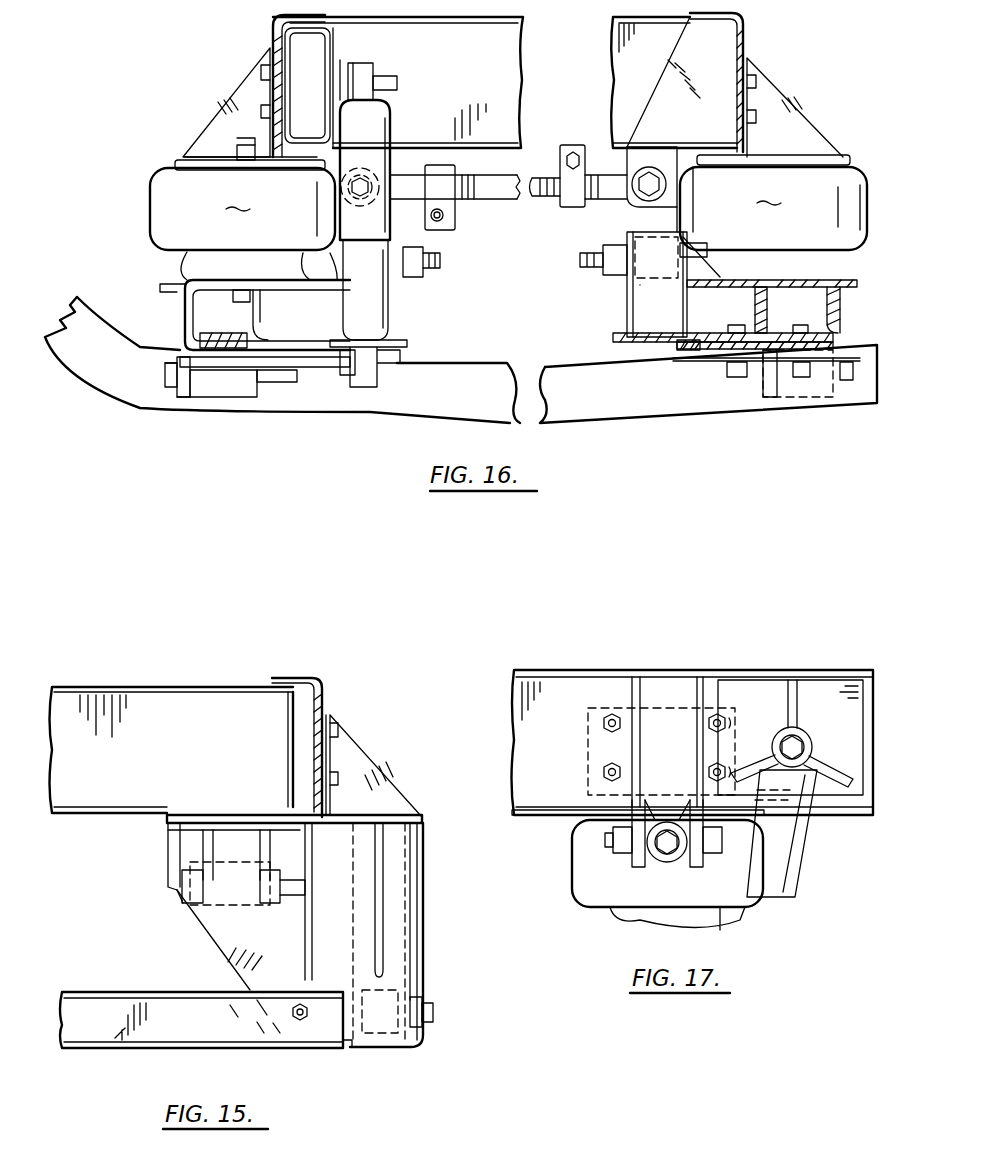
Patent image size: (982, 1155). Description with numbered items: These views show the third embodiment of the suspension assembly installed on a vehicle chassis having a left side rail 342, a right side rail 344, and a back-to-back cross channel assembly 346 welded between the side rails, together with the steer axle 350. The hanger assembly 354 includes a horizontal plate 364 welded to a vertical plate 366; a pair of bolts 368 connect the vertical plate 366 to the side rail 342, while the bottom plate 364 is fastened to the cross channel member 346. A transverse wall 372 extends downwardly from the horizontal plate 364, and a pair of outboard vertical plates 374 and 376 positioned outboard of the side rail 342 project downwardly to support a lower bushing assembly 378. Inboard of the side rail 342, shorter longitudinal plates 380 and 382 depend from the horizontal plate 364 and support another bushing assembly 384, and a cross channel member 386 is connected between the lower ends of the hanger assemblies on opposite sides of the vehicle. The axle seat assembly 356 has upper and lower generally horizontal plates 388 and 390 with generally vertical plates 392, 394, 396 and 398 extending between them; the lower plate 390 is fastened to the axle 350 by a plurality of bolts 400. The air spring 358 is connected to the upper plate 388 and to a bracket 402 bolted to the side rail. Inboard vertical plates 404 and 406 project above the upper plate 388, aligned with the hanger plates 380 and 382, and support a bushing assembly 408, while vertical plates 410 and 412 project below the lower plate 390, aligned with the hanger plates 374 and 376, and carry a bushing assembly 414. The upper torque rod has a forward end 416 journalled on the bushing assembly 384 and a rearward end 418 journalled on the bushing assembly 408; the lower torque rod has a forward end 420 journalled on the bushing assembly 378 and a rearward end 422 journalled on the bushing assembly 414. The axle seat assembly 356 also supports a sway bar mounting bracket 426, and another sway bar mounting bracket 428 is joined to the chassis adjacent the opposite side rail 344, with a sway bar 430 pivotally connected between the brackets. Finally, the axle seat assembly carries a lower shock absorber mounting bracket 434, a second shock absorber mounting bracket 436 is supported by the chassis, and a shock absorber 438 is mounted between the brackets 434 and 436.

In FIG. 16, the left side rail 342 is at (273, 22).
In FIG. 15, the left side rail 342 is at (318, 678).
In FIG. 16, the right side rail 344 is at (743, 38).
In FIG. 17, the right side rail 344 is at (587, 670).
In FIG. 16, the back-to-back cross channel assembly 346 is at (518, 74).
In FIG. 15, the back-to-back cross channel assembly 346 is at (190, 680).
In FIG. 17, the back-to-back cross channel assembly 346 is at (790, 705).
In FIG. 16, the steer axle 350 is at (547, 363).
In FIG. 15, the hanger assembly 354 is at (436, 868).
In FIG. 16, the axle seat assembly 356 is at (183, 310).
In FIG. 16, the air spring 358 is at (870, 162).
In FIG. 17, the air spring 358 is at (570, 903).
In FIG. 15, the horizontal plate 364 is at (393, 815).
In FIG. 15, the vertical plate 366 is at (330, 753).
In FIG. 15, the bolts 368 is at (331, 718).
In FIG. 15, the transverse wall 372 is at (397, 928).
In FIG. 15, the outboard vertical plate 374 is at (348, 920).
In FIG. 15, the outboard vertical plate 376 is at (411, 958).
In FIG. 15, the lower bushing assembly 378 is at (433, 1023).
In FIG. 15, the longitudinal plate 380 is at (200, 838).
In FIG. 15, the longitudinal plate 382 is at (248, 845).
In FIG. 15, the bushing assembly 384 is at (173, 910).
In FIG. 15, the cross channel member 386 is at (152, 1040).
In FIG. 16, the upper plate 388 is at (283, 277).
In FIG. 16, the lower plate 390 is at (700, 350).
In FIG. 16, the vertical plate 392 is at (755, 302).
In FIG. 16, the vertical plate 394 is at (782, 280).
In FIG. 16, the vertical plate 396 is at (823, 302).
In FIG. 16, the vertical plate 398 is at (840, 336).
In FIG. 16, the bolts 400 is at (737, 377).
In FIG. 16, the bracket 402 is at (250, 80).
In FIG. 17, the bracket 402 is at (653, 707).
In FIG. 16, the inboard vertical plate 404 is at (627, 298).
In FIG. 16, the inboard vertical plate 406 is at (683, 312).
In FIG. 16, the bushing assembly 408 is at (438, 262).
In FIG. 16, the vertical plate 410 is at (183, 398).
In FIG. 16, the vertical plate 412 is at (258, 400).
In FIG. 16, the bushing assembly 414 is at (222, 400).
In FIG. 15, the forward end 416 is at (212, 916).
In FIG. 16, the rearward end 418 is at (643, 238).
In FIG. 15, the forward end 420 is at (383, 1038).
In FIG. 16, the rearward end 422 is at (167, 390).
In FIG. 16, the sway bar mounting bracket 426 is at (390, 175).
In FIG. 16, the sway bar mounting bracket 428 is at (654, 152).
In FIG. 17, the sway bar mounting bracket 428 is at (633, 863).
In FIG. 16, the sway bar 430 is at (530, 212).
In FIG. 17, the sway bar 430 is at (670, 853).
In FIG. 16, the lower shock absorber mounting bracket 434 is at (345, 367).
In FIG. 16, the shock absorber mounting bracket 436 is at (345, 60).
In FIG. 16, the shock absorber 438 is at (378, 303).
In FIG. 17, the shock absorber 438 is at (793, 872).